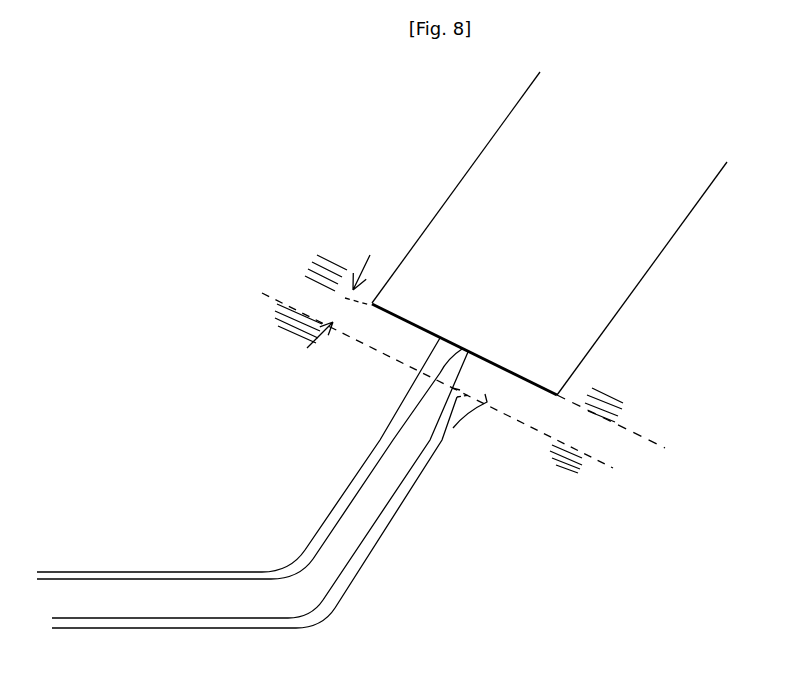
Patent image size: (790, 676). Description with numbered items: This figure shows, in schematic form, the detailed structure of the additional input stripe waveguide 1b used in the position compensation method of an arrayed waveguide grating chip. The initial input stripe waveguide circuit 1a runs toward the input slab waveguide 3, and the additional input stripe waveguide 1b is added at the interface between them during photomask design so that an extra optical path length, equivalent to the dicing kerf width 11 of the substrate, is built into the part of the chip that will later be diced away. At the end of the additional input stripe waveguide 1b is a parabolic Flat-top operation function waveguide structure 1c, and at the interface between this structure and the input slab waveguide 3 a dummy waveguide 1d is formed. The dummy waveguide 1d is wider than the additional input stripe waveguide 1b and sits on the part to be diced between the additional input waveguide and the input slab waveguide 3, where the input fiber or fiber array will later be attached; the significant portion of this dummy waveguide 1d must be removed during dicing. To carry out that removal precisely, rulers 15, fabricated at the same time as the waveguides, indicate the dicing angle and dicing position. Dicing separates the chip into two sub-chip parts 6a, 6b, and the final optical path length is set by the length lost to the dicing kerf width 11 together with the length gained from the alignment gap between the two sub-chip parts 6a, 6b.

The input slab waveguide 3 is at (512, 193).
The dicing kerf width 11 is at (345, 298).
The ruler 15 is at (598, 472).
The sub-chip part 6a is at (591, 515).
The sub-chip part 6b is at (652, 393).
The initial input stripe waveguide circuit 1a is at (293, 547).
The additional input stripe waveguide 1b is at (347, 593).
The parabolic Flat-top operation function waveguide structure 1c is at (450, 403).
The dummy waveguide 1d is at (486, 394).